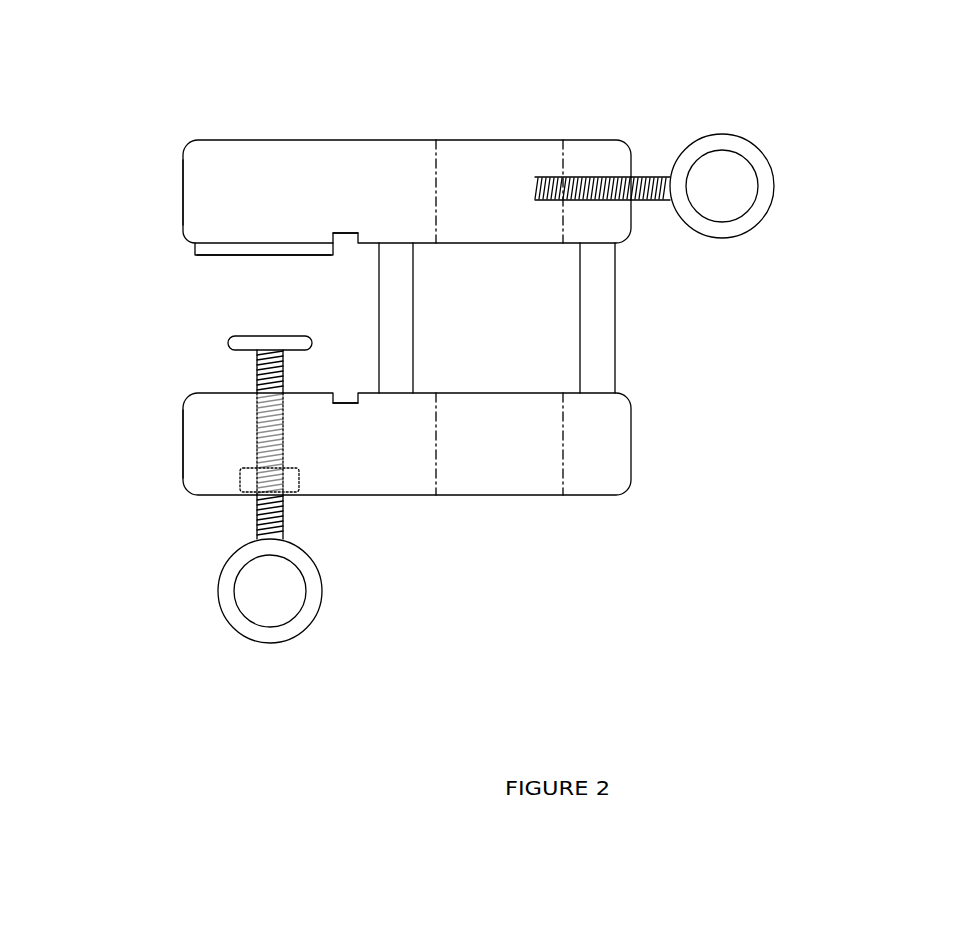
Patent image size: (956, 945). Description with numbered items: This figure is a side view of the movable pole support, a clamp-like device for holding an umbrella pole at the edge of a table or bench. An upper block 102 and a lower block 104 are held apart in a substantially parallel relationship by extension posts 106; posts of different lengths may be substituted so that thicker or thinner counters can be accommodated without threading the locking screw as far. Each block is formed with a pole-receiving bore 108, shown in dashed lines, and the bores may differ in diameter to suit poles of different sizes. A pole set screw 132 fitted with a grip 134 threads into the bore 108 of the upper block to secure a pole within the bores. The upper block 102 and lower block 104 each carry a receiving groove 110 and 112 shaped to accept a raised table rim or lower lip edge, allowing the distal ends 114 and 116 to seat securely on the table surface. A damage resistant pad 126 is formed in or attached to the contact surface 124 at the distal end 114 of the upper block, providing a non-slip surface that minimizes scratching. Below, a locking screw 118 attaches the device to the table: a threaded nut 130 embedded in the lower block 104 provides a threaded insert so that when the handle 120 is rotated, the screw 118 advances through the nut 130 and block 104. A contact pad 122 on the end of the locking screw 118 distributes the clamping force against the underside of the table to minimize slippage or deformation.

The upper block 102 is at (618, 218).
The lower block 104 is at (620, 450).
The extension posts 106 is at (402, 313).
The pole-receiving bore 108 is at (522, 140).
The receiving groove 110 is at (353, 233).
The receiving groove 112 is at (343, 398).
The distal end 114 is at (195, 200).
The distal end 116 is at (195, 440).
The locking screw 118 is at (257, 510).
The handle 120 is at (322, 587).
The contact pad 122 is at (228, 345).
The contact surface 124 is at (210, 235).
The damage resistant pad 126 is at (205, 256).
The threaded nut 130 is at (298, 475).
The pole set screw 132 is at (655, 175).
The grip 134 is at (735, 148).